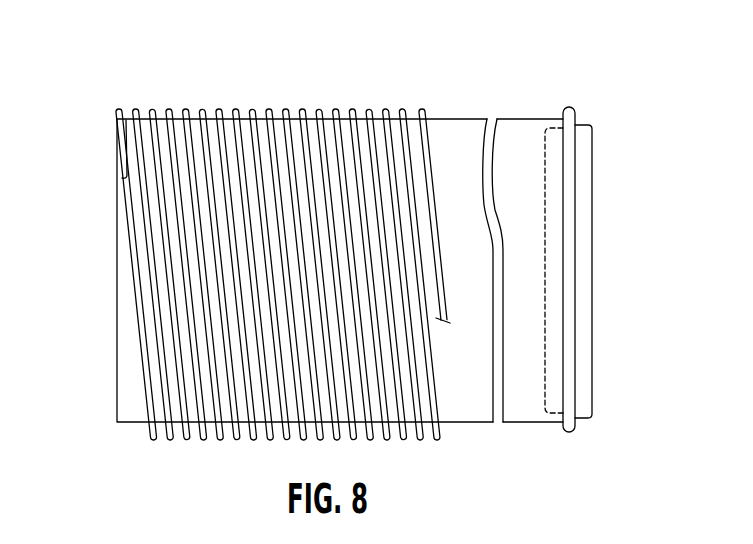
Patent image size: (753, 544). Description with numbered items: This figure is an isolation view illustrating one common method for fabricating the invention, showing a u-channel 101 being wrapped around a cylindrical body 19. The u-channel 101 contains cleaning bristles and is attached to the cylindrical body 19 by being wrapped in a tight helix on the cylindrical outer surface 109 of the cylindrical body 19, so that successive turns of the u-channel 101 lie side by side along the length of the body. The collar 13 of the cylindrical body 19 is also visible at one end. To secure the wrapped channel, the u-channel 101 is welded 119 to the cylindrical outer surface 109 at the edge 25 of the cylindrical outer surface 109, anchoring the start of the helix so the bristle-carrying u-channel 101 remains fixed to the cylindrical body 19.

The edge 25 is at (114, 418).
The u-channel 101 is at (136, 113).
The weld 119 is at (113, 163).
The cylindrical outer surface 109 is at (518, 135).
The collar 13 is at (588, 276).
The cylindrical body 19 is at (577, 427).